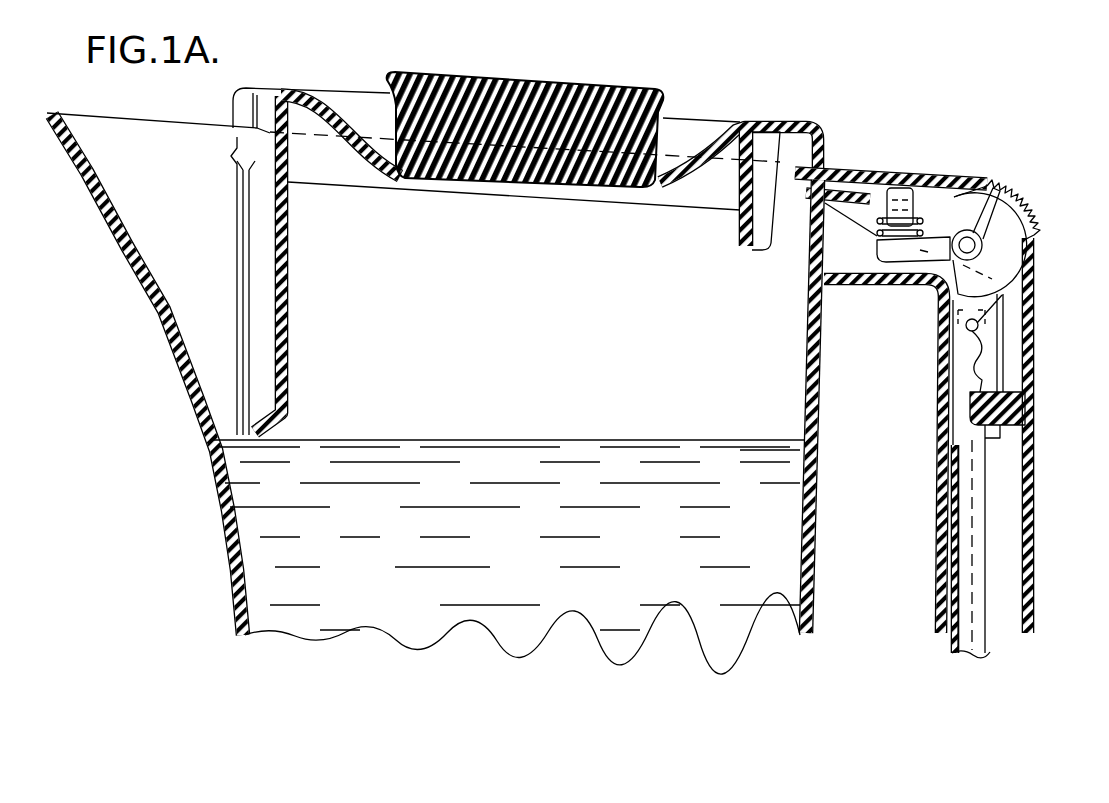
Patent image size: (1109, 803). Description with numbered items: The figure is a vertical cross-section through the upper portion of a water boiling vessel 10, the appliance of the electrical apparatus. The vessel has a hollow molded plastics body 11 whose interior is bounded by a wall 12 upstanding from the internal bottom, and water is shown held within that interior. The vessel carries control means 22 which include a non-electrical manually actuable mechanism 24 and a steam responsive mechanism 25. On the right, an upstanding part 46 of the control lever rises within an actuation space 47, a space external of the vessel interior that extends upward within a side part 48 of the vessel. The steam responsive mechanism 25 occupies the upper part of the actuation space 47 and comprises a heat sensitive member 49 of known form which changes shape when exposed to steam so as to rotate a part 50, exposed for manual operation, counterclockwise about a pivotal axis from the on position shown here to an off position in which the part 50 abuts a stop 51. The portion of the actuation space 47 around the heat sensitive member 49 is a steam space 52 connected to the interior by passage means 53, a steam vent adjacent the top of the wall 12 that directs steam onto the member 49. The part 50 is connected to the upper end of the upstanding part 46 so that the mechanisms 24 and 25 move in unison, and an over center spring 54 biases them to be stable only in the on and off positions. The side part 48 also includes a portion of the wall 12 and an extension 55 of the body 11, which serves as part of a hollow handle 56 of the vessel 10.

The water boiling vessel 10 is at (208, 525).
The hollow molded plastics body 11 is at (429, 393).
The wall 12 is at (827, 406).
The control means 22 is at (1030, 476).
The non-electrical manually actuable mechanism 24 is at (1030, 476).
The steam responsive mechanism 25 is at (932, 213).
The upstanding part 46 is at (978, 597).
The actuation space 47 is at (999, 477).
The side part 48 is at (810, 582).
The heat sensitive member 49 is at (878, 230).
The part 50 is at (1026, 203).
The stop 51 is at (967, 183).
The steam space 52 is at (852, 207).
The passage means 53 is at (815, 206).
The over center spring 54 is at (975, 390).
The extension 55 is at (946, 422).
The hollow handle 56 is at (932, 478).